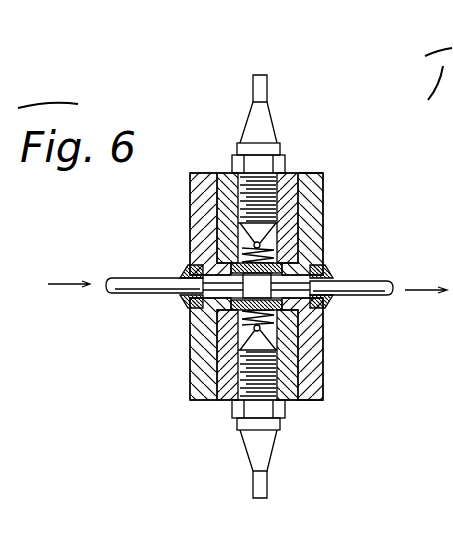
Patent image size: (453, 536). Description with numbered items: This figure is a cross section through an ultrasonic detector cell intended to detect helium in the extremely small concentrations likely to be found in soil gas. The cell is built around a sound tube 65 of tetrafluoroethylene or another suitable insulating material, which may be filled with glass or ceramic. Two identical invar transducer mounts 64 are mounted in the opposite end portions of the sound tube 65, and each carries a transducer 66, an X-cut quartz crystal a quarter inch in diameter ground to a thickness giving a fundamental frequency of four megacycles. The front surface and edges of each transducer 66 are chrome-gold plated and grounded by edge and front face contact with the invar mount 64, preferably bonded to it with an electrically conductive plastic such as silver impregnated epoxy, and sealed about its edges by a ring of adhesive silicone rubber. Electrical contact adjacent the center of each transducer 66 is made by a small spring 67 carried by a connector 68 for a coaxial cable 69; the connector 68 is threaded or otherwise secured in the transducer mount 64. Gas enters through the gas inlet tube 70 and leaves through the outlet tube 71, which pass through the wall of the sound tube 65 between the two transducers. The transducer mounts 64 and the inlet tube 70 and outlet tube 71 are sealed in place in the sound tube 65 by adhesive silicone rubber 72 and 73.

The invar transducer mount 64 is at (295, 220).
The sound tube 65 is at (200, 205).
The transducer 66 is at (300, 255).
The spring 67 is at (300, 238).
The connector 68 is at (290, 198).
The coaxial cable 69 is at (270, 130).
The gas inlet tube 70 is at (148, 278).
The outlet tube 71 is at (385, 296).
The adhesive silicone rubber 72 is at (188, 300).
The adhesive silicone rubber 73 is at (310, 167).